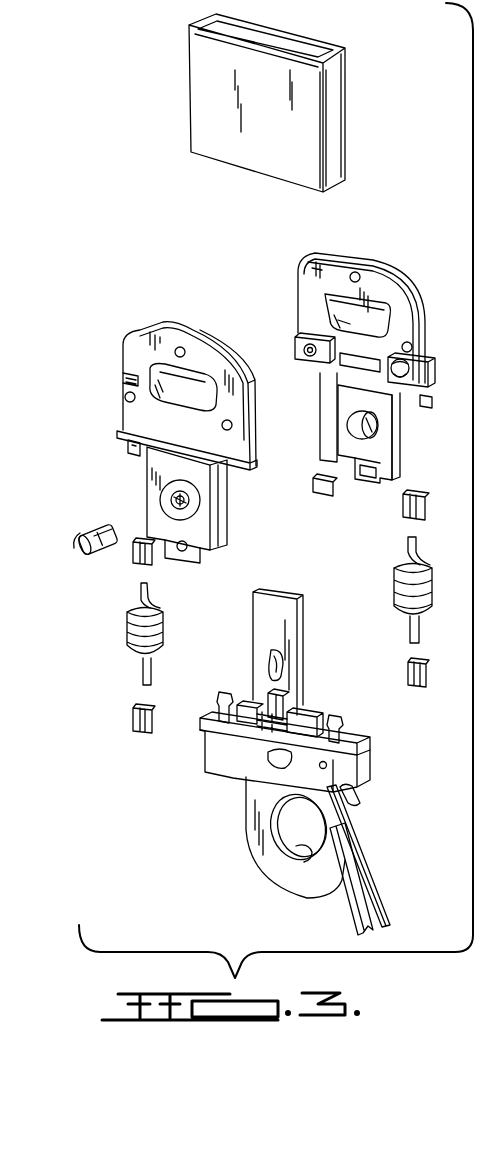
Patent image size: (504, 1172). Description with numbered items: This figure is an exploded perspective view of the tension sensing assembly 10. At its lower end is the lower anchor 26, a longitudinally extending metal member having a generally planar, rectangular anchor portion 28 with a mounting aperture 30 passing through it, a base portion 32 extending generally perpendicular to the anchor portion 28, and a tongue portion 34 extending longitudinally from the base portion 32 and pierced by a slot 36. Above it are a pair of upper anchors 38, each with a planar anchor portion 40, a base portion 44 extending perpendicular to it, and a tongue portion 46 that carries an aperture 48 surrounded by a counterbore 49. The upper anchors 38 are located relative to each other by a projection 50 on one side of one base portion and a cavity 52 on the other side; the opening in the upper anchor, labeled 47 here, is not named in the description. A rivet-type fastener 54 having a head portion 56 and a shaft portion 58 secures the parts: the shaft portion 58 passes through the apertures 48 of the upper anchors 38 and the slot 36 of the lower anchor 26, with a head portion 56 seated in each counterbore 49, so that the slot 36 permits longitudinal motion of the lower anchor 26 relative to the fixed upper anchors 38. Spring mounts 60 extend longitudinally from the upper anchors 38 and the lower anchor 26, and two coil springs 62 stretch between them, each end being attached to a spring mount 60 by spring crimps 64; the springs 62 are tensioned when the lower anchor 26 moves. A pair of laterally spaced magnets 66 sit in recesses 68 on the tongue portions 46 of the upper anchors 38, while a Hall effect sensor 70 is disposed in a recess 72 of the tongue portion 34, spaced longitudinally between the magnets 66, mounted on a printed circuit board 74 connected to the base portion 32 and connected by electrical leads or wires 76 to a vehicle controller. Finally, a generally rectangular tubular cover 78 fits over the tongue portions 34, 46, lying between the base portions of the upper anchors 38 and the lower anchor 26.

The tension sensing assembly 10 is at (126, 231).
The lower anchor 26 is at (246, 800).
The anchor portion 28 is at (270, 855).
The mounting aperture 30 is at (302, 855).
The base portion 32 is at (365, 763).
The tongue portion 34 is at (285, 600).
The slot 36 is at (262, 658).
The upper anchor 38 is at (125, 348).
The anchor portion 40 is at (168, 335).
The base portion 44 is at (118, 430).
The tongue portion 46 is at (198, 478).
The window 47 is at (185, 372).
The aperture 48 is at (178, 503).
The counterbore 49 is at (192, 520).
The projection 50 is at (410, 368).
The cavity 52 is at (298, 347).
The fastener 54 is at (96, 532).
The head portion 56 is at (82, 546).
The shaft portion 58 is at (108, 558).
The spring mount 60 is at (128, 450).
The spring 62 is at (126, 630).
The spring crimp 64 is at (148, 562).
The magnet 66 is at (268, 502).
The recess 68 is at (370, 484).
The Hall effect sensor 70 is at (237, 740).
The recess 72 is at (290, 698).
The printed circuit board 74 is at (300, 740).
The electrical leads or wires 76 is at (355, 812).
The cover 78 is at (215, 88).